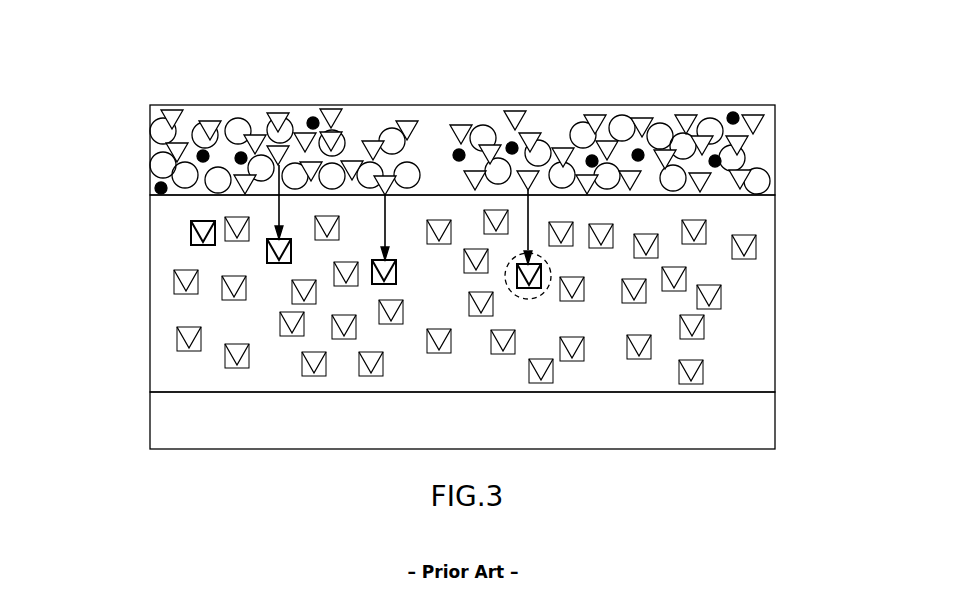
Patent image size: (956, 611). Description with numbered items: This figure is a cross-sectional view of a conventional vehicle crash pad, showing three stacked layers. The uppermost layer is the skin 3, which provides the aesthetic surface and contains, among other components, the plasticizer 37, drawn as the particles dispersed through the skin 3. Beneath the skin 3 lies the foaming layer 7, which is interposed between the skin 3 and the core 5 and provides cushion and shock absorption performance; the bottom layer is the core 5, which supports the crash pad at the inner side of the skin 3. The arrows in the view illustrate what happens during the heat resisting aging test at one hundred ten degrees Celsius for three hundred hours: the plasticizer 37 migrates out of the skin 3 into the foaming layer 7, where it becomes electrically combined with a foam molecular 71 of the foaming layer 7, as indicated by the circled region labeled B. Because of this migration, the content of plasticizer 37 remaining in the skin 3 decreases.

The skin 3 is at (431, 122).
The plasticizer 37 is at (513, 110).
The foaming layer 7 is at (465, 278).
The foam molecular 71 is at (748, 247).
The core 5 is at (150, 416).